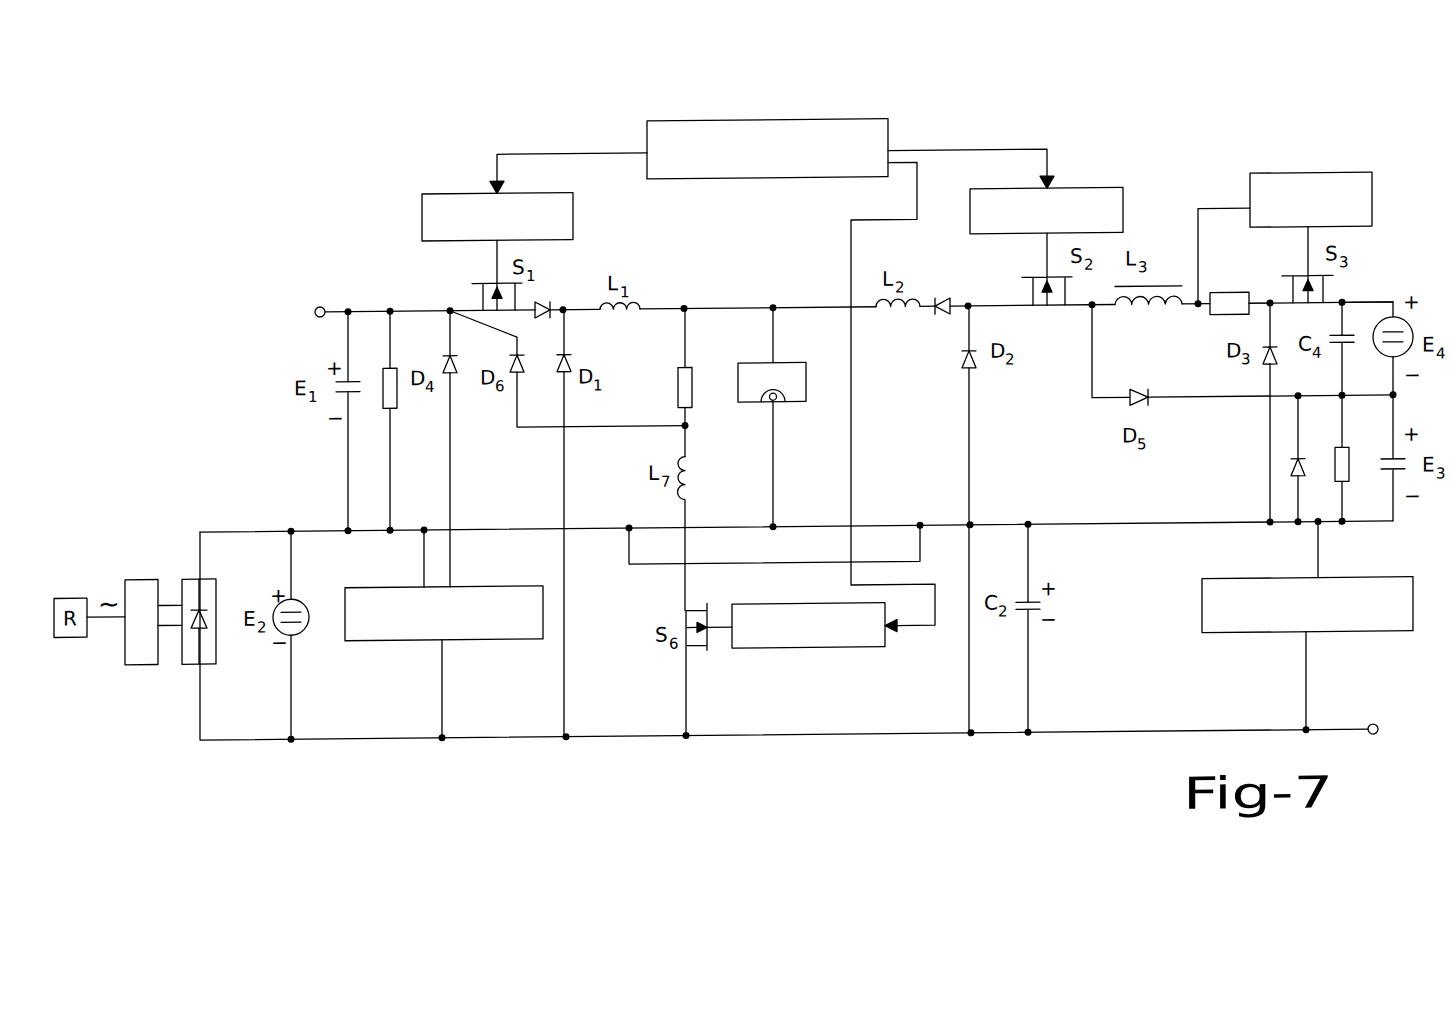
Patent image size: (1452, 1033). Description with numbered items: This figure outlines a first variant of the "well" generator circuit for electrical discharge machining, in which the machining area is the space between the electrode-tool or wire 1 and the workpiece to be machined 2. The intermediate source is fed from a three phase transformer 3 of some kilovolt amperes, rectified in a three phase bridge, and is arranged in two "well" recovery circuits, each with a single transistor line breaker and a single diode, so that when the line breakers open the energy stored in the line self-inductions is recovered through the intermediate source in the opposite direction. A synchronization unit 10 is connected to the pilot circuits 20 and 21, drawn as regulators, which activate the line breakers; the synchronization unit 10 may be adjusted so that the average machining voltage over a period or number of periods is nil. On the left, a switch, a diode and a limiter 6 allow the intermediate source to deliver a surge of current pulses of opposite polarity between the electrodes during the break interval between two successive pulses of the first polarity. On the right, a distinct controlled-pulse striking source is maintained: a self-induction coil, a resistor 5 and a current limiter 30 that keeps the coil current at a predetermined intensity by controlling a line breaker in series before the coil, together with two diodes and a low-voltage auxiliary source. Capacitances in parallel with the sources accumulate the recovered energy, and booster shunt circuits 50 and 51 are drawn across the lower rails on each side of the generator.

The synchronization unit 10 is at (805, 127).
The pilot circuit 20 is at (455, 197).
The pilot circuit 21 is at (860, 655).
The current limiter 30 is at (1372, 216).
The resistor 5 is at (1230, 304).
The workpiece to be machined 2 is at (788, 381).
The electrode-tool or wire 1 is at (770, 407).
The limiter 6 is at (676, 390).
The three phase transformer 3 is at (147, 667).
The booster shunt circuit 50 is at (377, 644).
The booster shunt circuit 51 is at (1223, 644).